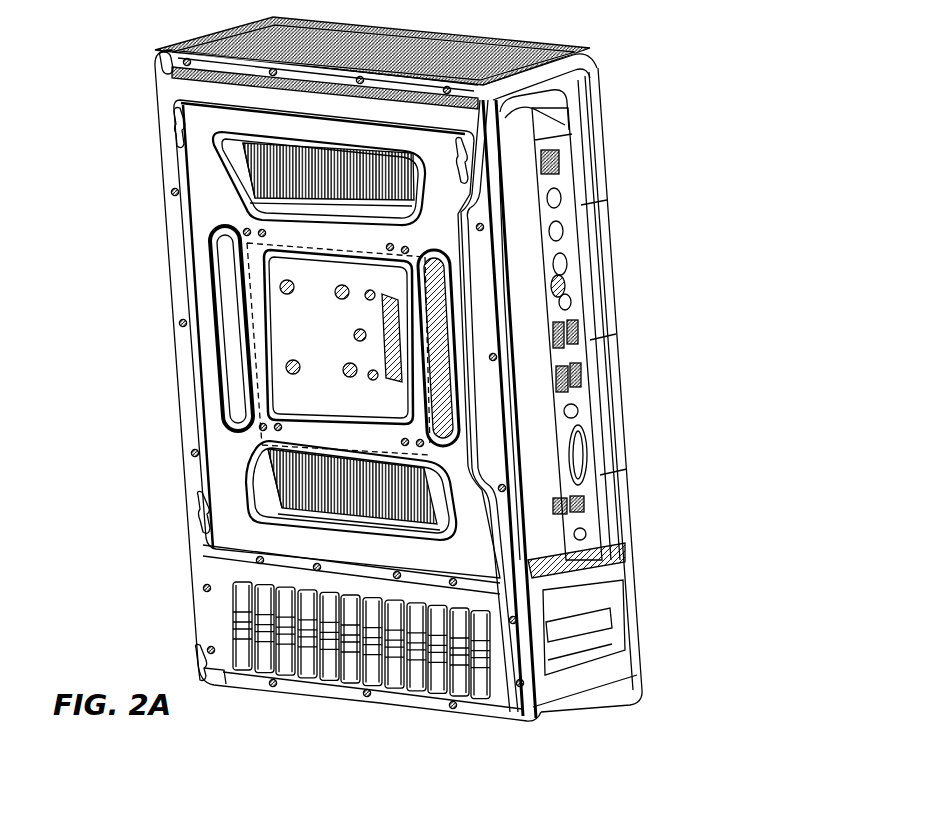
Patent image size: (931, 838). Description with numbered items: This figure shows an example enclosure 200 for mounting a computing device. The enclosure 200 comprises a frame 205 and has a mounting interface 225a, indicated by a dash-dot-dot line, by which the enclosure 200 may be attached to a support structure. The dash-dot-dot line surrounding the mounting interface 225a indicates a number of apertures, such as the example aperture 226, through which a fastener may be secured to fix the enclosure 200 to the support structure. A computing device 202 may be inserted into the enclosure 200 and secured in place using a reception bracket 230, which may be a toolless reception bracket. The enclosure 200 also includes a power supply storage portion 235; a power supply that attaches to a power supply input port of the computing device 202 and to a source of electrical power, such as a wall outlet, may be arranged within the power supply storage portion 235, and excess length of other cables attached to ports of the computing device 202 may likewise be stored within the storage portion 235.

The enclosure 200 is at (728, 63).
The computing device 202 is at (560, 128).
The frame 205 is at (590, 58).
The mounting interface 225a is at (238, 229).
The aperture 226 is at (244, 231).
The reception bracket 230 is at (343, 338).
The power supply storage portion 235 is at (590, 642).